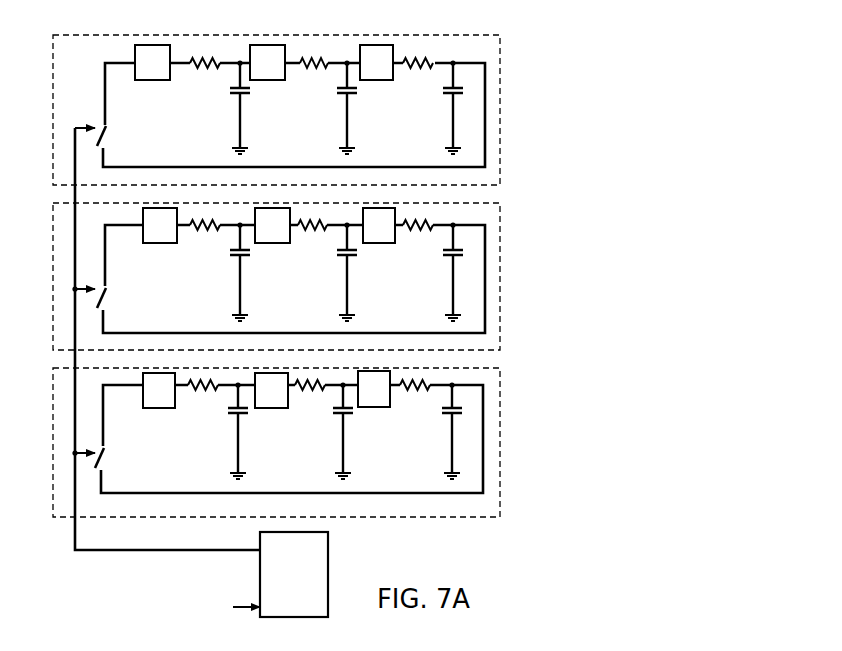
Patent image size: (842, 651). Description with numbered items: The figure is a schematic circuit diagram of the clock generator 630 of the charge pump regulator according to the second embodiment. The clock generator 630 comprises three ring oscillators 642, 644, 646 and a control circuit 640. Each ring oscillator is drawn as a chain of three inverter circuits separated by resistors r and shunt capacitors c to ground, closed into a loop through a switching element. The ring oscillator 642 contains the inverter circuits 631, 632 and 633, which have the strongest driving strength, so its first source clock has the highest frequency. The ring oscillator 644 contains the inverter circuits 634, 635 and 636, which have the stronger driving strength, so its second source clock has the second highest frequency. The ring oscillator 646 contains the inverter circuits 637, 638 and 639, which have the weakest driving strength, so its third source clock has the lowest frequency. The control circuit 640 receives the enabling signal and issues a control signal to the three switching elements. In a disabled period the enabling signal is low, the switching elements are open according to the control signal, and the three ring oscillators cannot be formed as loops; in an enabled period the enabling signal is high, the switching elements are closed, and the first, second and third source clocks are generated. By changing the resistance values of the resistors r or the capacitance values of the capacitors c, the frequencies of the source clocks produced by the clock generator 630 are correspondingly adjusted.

The clock generator 630 is at (140, 578).
The inverter circuit 631 is at (165, 78).
The inverter circuit 632 is at (280, 78).
The inverter circuit 633 is at (389, 78).
The inverter circuit 634 is at (173, 241).
The inverter circuit 635 is at (285, 241).
The inverter circuit 636 is at (392, 241).
The inverter circuit 637 is at (172, 406).
The inverter circuit 638 is at (284, 406).
The inverter circuit 639 is at (387, 405).
The control circuit 640 is at (298, 614).
The ring oscillator 642 is at (53, 70).
The ring oscillator 644 is at (53, 237).
The ring oscillator 646 is at (53, 400).